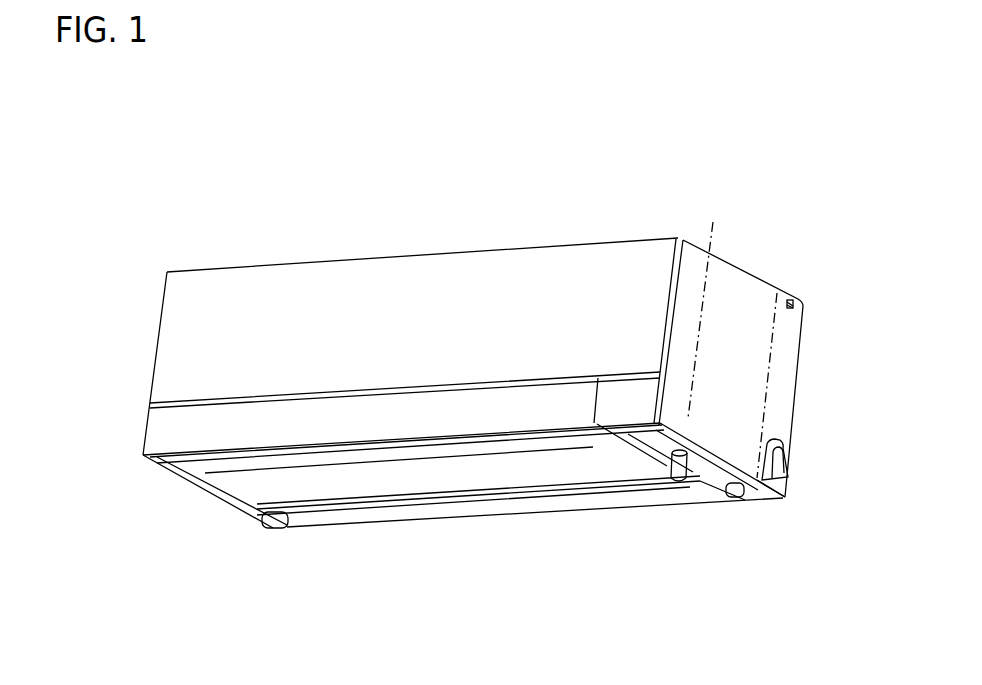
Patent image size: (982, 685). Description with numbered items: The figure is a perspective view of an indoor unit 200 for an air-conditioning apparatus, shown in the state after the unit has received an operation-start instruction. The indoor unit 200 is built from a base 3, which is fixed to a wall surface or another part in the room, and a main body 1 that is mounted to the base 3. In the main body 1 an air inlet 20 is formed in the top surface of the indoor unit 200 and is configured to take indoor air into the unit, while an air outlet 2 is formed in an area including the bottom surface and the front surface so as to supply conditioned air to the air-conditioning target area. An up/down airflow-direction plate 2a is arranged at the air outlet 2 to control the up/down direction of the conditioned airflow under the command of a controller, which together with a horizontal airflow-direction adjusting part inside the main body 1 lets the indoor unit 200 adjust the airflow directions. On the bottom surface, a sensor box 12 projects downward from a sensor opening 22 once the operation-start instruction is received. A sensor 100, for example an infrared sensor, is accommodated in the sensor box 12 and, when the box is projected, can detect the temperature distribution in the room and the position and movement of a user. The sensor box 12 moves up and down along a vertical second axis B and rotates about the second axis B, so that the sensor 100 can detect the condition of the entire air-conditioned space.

The indoor unit 200 is at (742, 171).
The main body 1 is at (742, 277).
The air inlet 20 is at (380, 231).
The second axis B is at (709, 228).
The base 3 is at (796, 350).
The air outlet 2 is at (370, 473).
The up/down airflow-direction plate 2a is at (393, 443).
The sensor box 12 is at (696, 471).
The sensor 100 is at (646, 492).
The sensor opening 22 is at (727, 497).